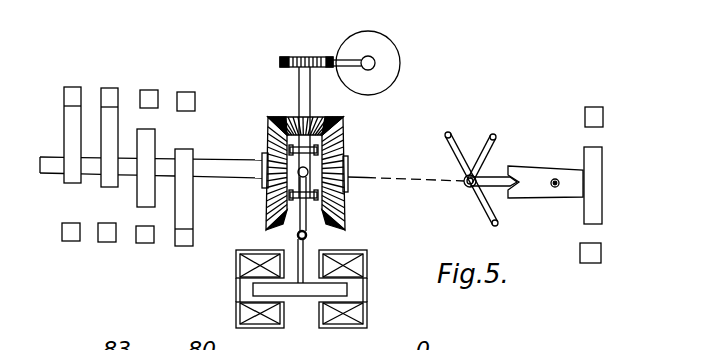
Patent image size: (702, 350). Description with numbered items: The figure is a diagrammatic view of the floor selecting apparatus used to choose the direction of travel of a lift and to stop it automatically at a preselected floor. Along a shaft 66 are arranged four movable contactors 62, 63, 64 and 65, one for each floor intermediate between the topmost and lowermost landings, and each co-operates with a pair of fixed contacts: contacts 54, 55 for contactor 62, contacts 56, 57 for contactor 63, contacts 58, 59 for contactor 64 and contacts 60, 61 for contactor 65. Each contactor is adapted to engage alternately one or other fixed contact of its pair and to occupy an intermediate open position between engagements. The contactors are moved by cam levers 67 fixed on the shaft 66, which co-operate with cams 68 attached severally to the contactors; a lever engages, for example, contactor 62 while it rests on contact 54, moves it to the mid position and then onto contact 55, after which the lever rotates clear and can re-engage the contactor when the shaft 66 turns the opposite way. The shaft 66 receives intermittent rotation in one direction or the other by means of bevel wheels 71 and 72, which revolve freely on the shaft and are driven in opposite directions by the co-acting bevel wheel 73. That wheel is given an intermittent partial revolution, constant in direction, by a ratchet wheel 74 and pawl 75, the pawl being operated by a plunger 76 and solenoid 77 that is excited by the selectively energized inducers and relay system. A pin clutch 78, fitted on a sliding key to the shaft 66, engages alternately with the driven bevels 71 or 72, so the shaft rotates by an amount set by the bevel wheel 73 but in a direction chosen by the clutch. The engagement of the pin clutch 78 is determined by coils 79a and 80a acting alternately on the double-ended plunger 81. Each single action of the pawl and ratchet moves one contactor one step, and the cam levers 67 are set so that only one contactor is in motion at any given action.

The fixed contact 54 is at (75, 96).
The fixed contact 55 is at (68, 227).
The fixed contact 56 is at (113, 95).
The fixed contact 57 is at (105, 227).
The fixed contact 58 is at (150, 100).
The fixed contact 59 is at (143, 228).
The fixed contact 60 is at (187, 100).
The fixed contact 61 is at (178, 232).
The movable contactor 62 is at (72, 132).
The movable contactor 63 is at (112, 170).
The movable contactor 64 is at (150, 142).
The movable contactor 65 is at (187, 160).
The shaft 66 is at (465, 186).
The cam lever 67 is at (480, 162).
The cam 68 is at (543, 178).
The bevel wheel 71 is at (345, 153).
The bevel wheel 72 is at (268, 133).
The bevel wheel 73 is at (298, 117).
The ratchet wheel 74 is at (302, 57).
The pawl 75 is at (345, 62).
The plunger 76 is at (389, 90).
The solenoid 77 is at (377, 75).
The pin clutch 78 is at (295, 199).
The coil 79a is at (240, 312).
The coil 80a is at (355, 313).
The double-ended plunger 81 is at (308, 290).